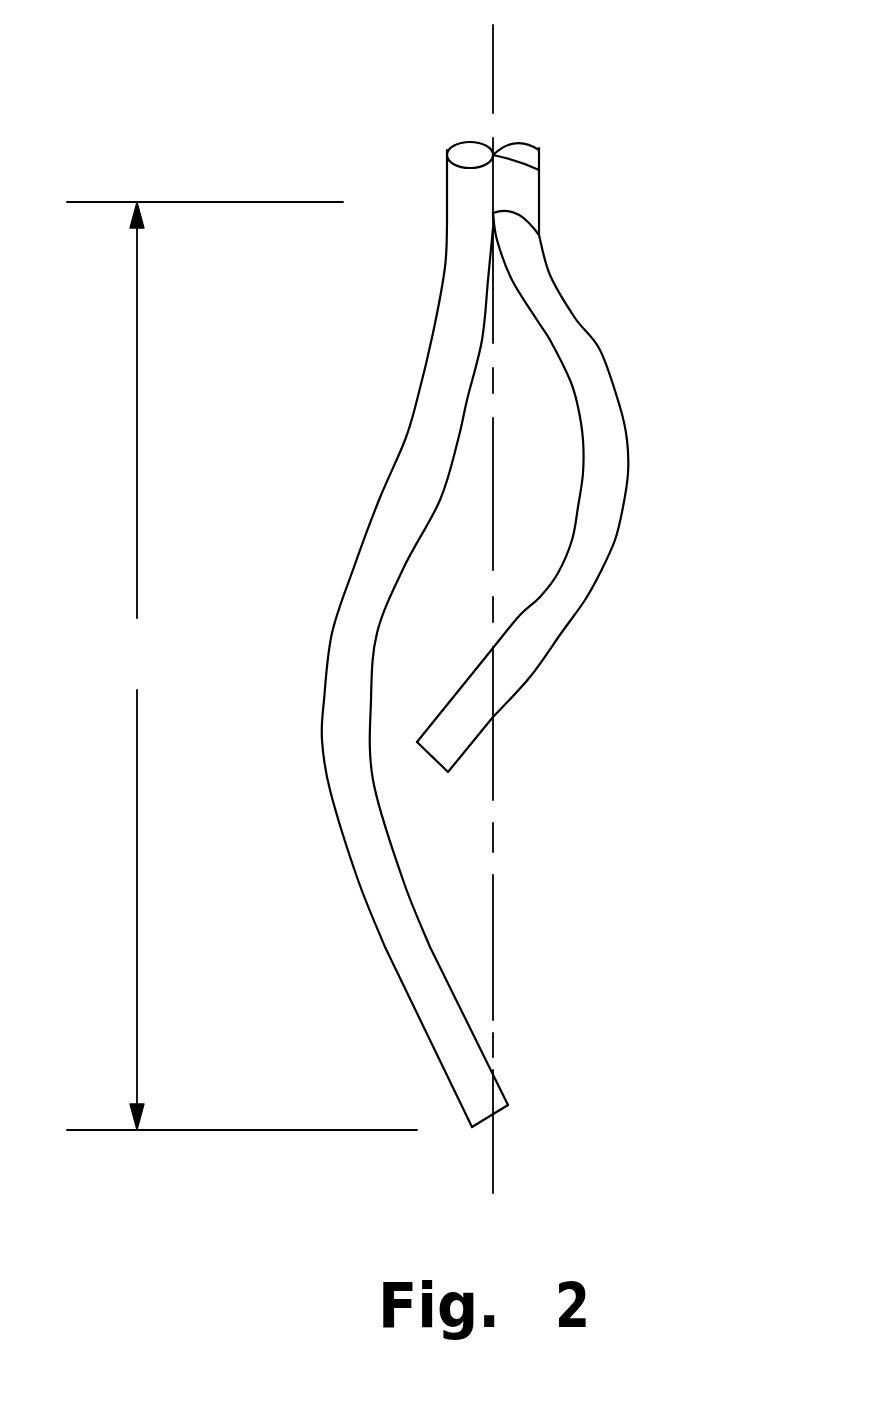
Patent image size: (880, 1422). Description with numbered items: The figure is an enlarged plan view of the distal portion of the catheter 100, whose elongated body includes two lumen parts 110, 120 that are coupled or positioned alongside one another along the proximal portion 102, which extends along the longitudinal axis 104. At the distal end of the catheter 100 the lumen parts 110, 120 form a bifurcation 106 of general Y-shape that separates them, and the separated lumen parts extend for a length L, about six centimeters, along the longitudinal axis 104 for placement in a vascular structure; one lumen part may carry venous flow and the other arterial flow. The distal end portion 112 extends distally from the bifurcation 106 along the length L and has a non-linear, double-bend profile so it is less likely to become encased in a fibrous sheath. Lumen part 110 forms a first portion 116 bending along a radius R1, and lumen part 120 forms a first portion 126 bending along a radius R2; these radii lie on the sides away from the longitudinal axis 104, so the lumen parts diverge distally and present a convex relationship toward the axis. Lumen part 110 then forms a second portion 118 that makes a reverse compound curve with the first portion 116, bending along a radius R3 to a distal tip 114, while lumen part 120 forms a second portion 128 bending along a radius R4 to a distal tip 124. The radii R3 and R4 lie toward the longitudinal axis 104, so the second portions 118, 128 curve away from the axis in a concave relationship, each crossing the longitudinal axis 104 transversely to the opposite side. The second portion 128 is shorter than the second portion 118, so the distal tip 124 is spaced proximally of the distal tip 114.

The catheter 100 is at (303, 106).
The proximal portion 102 is at (553, 463).
The longitudinal axis 104 is at (493, 927).
The bifurcation 106 is at (538, 228).
The lumen part 110 is at (458, 180).
The distal end portion 112 is at (384, 638).
The distal tip 114 is at (508, 1098).
The first portion 116 is at (463, 289).
The second portion 118 is at (340, 805).
The lumen part 120 is at (524, 168).
The distal tip 124 is at (452, 760).
The first portion 126 is at (597, 350).
The second portion 128 is at (612, 530).
The radius R1 is at (430, 206).
The radius R2 is at (558, 206).
The radius R3 is at (390, 661).
The radius R4 is at (565, 463).
The length L is at (242, 666).